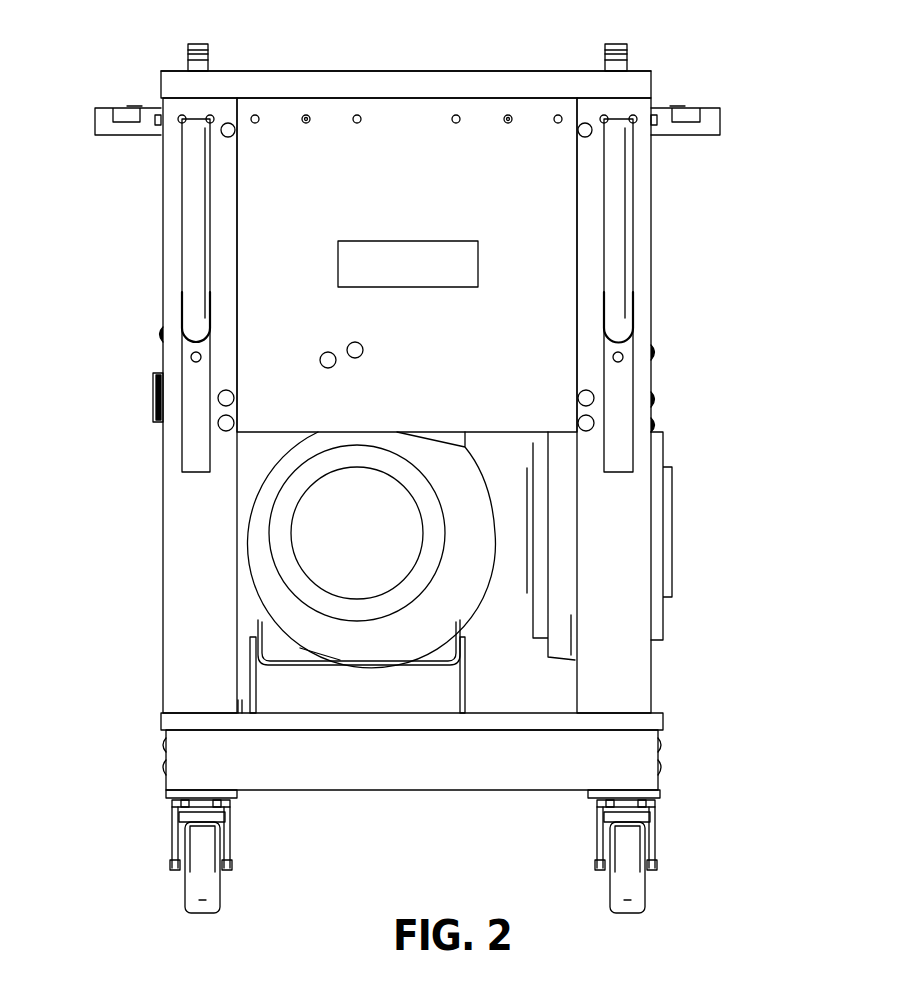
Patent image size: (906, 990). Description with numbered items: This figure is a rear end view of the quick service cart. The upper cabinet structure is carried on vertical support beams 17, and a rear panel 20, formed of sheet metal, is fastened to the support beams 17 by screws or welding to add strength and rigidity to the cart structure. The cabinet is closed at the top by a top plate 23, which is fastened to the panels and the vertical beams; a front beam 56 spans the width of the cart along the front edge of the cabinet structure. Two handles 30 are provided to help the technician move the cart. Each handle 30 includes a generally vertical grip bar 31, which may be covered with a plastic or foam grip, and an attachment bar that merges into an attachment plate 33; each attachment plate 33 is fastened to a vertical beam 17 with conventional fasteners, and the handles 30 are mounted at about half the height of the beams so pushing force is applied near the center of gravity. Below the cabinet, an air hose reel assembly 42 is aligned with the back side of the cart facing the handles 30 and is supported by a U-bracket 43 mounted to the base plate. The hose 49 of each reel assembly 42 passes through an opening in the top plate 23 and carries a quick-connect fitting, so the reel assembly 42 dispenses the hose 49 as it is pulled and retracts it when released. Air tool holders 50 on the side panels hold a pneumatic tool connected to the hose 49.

The support beam 17 is at (163, 590).
The rear panel 20 is at (398, 241).
The top plate 23 is at (395, 70).
The handle 30 is at (193, 212).
The grip bar 31 is at (193, 240).
The attachment plate 33 is at (196, 378).
The air hose reel assembly 42 is at (657, 443).
The U-bracket 43 is at (465, 690).
The hose 49 is at (188, 52).
The air tool holder 50 is at (105, 108).
The front beam 56 is at (492, 82).